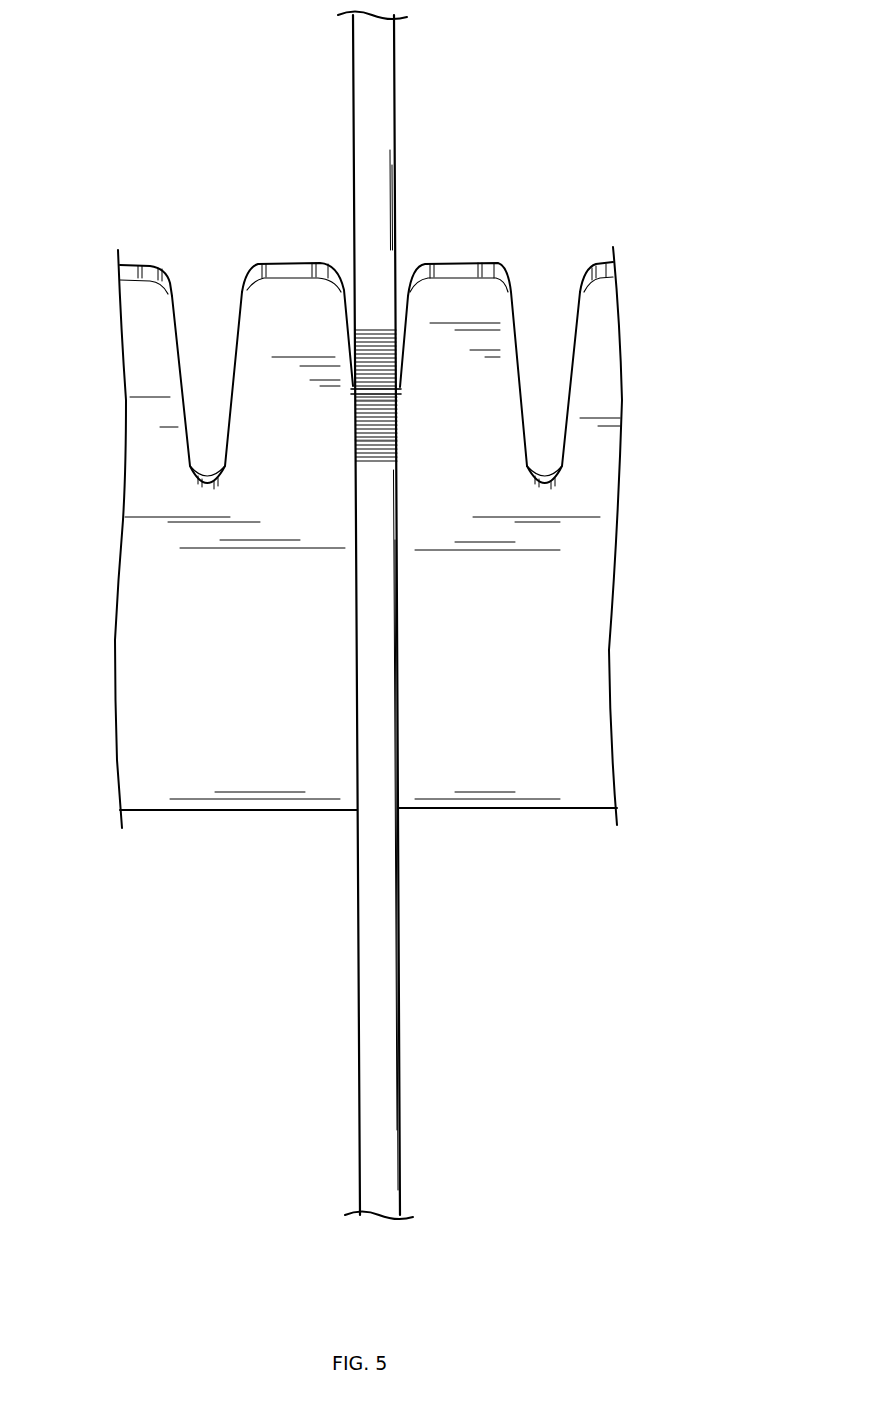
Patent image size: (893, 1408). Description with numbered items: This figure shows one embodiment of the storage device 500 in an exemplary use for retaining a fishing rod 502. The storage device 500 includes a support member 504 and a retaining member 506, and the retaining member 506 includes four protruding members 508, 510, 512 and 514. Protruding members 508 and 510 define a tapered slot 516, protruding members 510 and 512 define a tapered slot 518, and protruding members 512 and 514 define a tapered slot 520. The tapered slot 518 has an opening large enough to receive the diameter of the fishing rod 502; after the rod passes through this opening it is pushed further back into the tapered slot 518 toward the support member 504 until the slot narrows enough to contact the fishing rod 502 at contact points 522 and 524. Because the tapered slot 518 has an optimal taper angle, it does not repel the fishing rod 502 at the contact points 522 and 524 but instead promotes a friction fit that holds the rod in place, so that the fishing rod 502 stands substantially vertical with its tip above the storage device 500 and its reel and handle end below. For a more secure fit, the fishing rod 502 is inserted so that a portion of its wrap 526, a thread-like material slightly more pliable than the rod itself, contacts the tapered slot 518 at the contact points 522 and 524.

The storage device 500 is at (328, 451).
The fishing rod 502 is at (400, 128).
The support member 504 is at (175, 818).
The retaining member 506 is at (118, 366).
The protruding member 508 is at (137, 259).
The protruding member 510 is at (283, 259).
The protruding member 512 is at (455, 259).
The protruding member 514 is at (598, 259).
The tapered slot 516 is at (207, 268).
The tapered slot 518 is at (347, 268).
The tapered slot 520 is at (540, 268).
The contact point 522 is at (351, 441).
The contact point 524 is at (402, 406).
The wrap 526 is at (404, 394).